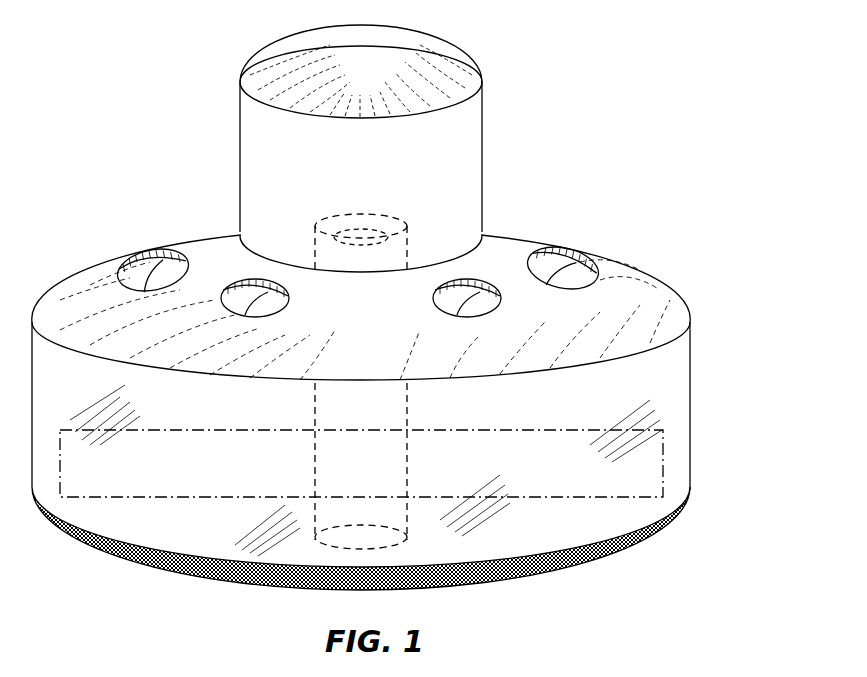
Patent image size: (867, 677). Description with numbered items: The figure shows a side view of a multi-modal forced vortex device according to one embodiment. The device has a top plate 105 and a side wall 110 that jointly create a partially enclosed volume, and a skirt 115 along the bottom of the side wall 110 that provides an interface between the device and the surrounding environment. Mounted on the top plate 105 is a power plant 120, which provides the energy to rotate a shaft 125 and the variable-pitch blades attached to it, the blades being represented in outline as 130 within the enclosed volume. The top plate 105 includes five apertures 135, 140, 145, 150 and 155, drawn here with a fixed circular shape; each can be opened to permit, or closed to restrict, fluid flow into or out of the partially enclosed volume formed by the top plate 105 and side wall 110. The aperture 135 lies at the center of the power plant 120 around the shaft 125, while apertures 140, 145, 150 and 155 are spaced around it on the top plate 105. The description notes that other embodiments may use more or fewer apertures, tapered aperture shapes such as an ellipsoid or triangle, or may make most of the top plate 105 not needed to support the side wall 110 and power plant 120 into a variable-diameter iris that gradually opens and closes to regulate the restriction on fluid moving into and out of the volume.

The top plate 105 is at (663, 300).
The side wall 110 is at (692, 396).
The skirt 115 is at (692, 502).
The power plant 120 is at (465, 68).
The shaft 125 is at (348, 222).
The variable-pitch blades 130 is at (361, 463).
The aperture 135 is at (363, 237).
The aperture 140 is at (152, 278).
The aperture 145 is at (289, 291).
The aperture 150 is at (435, 291).
The aperture 155 is at (553, 272).